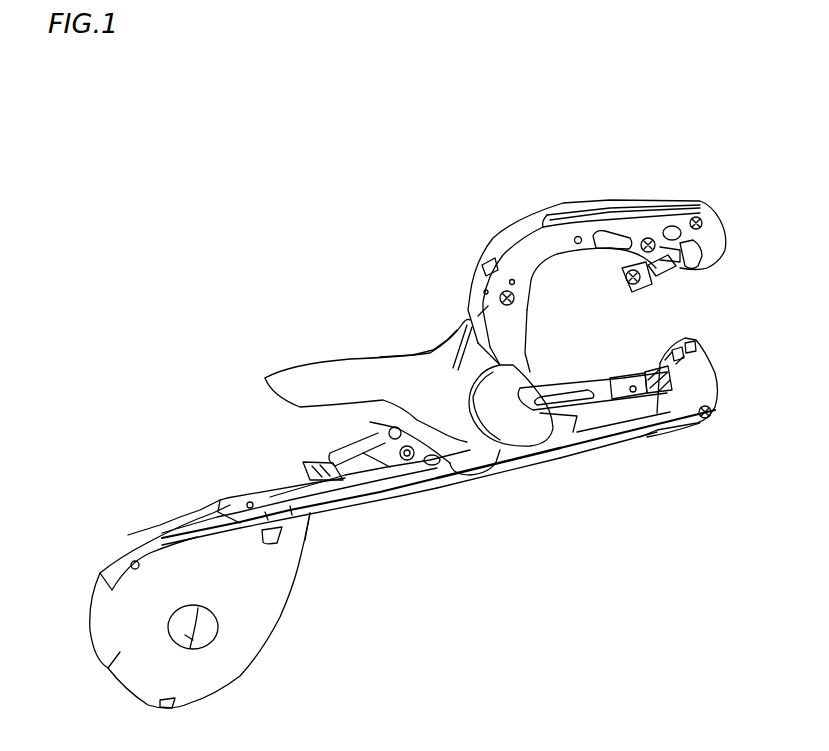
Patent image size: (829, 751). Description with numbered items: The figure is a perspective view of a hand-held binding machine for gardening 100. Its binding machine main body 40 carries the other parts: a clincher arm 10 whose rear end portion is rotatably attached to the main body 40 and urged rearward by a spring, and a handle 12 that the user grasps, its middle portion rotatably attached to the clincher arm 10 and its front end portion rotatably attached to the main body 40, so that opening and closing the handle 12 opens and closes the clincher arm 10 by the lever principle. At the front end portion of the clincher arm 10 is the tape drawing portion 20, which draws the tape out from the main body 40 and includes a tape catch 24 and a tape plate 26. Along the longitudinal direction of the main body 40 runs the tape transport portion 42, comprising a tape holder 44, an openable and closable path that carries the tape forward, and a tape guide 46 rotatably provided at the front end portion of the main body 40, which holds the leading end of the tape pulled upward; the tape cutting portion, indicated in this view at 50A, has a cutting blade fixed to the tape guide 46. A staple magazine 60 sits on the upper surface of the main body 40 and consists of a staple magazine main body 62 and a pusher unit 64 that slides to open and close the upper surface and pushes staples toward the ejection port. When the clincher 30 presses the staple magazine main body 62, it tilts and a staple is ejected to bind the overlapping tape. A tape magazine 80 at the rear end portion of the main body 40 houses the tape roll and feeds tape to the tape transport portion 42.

The binding machine for gardening 100 is at (246, 222).
The clincher arm 10 is at (523, 232).
The tape drawing portion 20 is at (676, 198).
The handle 12 is at (341, 360).
The clincher 30 is at (628, 288).
The tape plate 26 is at (658, 272).
The tape catch 24 is at (694, 268).
The tape gripping portion 50A is at (698, 340).
The staple magazine 60 is at (578, 390).
The staple magazine main body 62 is at (622, 380).
The tape guide 46 is at (712, 378).
The tape transport portion 42 is at (672, 440).
The tape holder 44 is at (560, 465).
The binding machine main body 40 is at (432, 490).
The pusher unit 64 is at (290, 464).
The tape magazine 80 is at (270, 625).